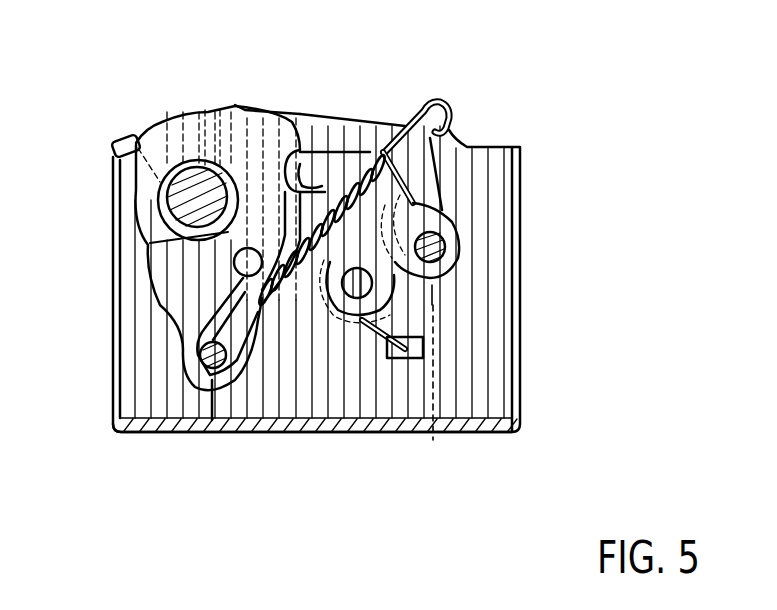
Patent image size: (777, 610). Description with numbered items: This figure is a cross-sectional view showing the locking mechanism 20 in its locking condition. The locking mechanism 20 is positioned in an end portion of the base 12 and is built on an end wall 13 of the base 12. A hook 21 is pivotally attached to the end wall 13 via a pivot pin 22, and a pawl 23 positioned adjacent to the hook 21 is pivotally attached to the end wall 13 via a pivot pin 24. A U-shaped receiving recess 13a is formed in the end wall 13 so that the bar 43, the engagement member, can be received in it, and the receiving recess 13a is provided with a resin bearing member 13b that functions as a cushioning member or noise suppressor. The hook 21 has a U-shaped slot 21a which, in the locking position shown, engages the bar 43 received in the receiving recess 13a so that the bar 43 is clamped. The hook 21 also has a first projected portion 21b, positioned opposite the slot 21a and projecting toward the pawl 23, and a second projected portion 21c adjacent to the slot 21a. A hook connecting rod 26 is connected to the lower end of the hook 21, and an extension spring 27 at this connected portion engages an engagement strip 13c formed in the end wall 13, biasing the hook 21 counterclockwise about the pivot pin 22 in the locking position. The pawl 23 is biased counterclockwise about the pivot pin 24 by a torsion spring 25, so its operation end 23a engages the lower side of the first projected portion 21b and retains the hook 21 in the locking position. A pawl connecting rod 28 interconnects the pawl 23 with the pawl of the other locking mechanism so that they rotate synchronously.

The base 12 is at (313, 437).
The end wall 13 is at (500, 177).
The receiving recess 13a is at (164, 106).
The resin bearing member 13b is at (117, 132).
The engagement strip 13c is at (437, 100).
The locking mechanism 20 is at (292, 97).
The hook 21 is at (250, 110).
The U-shaped slot 21a is at (150, 203).
The first projected portion 21b is at (300, 130).
The second projected portion 21c is at (163, 272).
The pivot pin 22 is at (243, 280).
The pawl 23 is at (420, 167).
The operation end 23a is at (362, 114).
The pivot pin 24 is at (357, 318).
The torsion spring 25 is at (433, 440).
The hook connecting rod 26 is at (210, 420).
The extension spring 27 is at (264, 330).
The pawl connecting rod 28 is at (450, 227).
The bar 43 is at (165, 228).